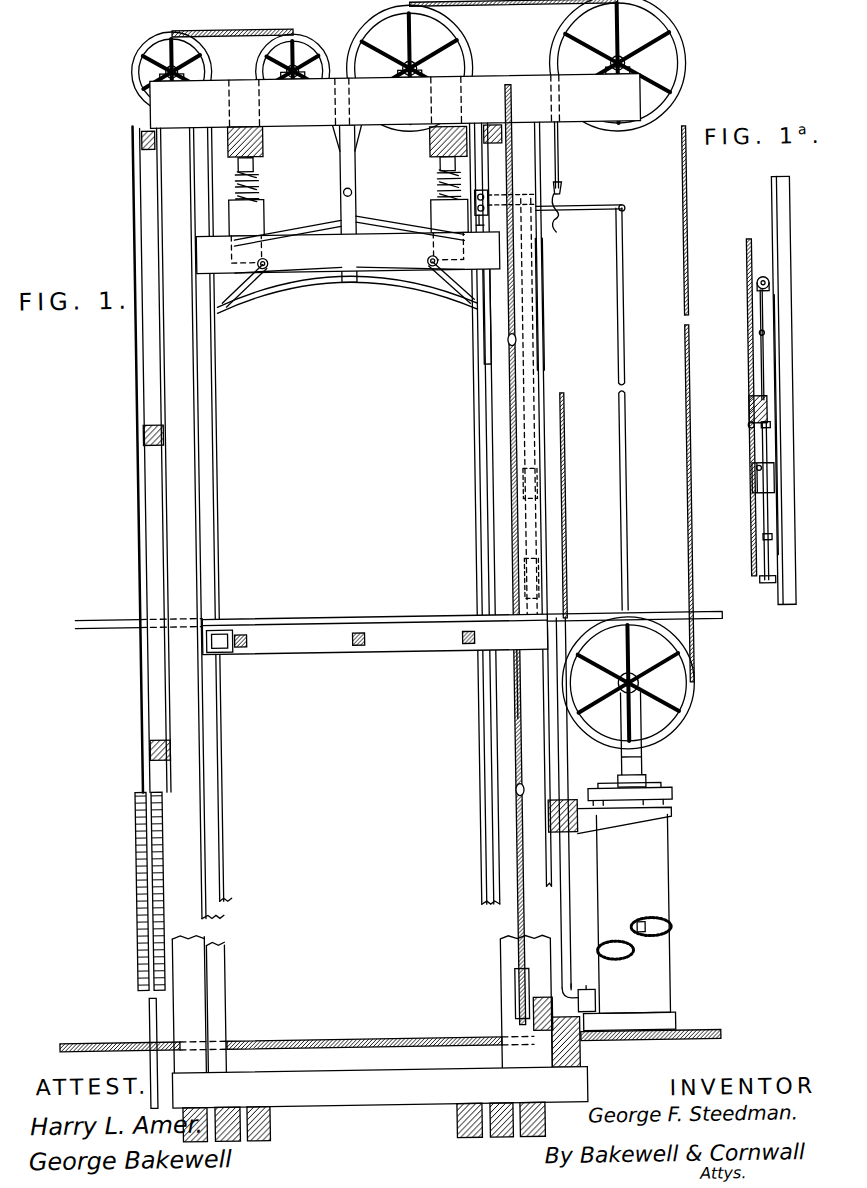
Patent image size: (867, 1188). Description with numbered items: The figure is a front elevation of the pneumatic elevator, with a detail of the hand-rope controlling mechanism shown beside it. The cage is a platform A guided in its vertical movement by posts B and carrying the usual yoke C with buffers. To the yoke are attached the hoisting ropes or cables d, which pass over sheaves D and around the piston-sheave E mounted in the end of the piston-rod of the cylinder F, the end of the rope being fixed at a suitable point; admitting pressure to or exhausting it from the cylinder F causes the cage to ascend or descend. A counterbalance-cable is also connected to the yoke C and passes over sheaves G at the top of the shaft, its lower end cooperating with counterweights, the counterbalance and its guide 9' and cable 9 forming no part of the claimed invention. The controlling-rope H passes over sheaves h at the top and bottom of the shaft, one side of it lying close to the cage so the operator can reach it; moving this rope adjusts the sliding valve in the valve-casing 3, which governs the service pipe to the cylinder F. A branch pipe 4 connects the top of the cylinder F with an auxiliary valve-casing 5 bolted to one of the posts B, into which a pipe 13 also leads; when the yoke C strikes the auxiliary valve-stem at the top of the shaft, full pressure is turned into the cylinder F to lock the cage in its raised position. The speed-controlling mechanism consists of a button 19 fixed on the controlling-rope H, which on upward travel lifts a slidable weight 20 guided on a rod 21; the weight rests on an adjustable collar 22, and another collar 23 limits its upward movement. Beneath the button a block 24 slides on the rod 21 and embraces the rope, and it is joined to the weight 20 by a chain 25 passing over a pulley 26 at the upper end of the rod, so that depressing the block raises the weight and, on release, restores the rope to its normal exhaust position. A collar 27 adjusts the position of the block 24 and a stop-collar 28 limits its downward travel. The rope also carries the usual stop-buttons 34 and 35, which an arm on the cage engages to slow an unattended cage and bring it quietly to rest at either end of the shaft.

In FIG. 1, the platform A is at (327, 616).
In FIG. 1, the posts B is at (220, 746).
In FIG. 1, the yoke C is at (348, 264).
In FIG. 1, the sheaves D is at (478, 64).
In FIG. 1, the hoisting ropes or cables d is at (688, 222).
In FIG. 1, the piston-sheave E is at (694, 714).
In FIG. 1, the cylinder F is at (660, 881).
In FIG. 1, the sheaves G is at (140, 46).
In FIG. 1, the controlling-rope H is at (512, 683).
In FIG. 1a, the controlling-rope H is at (750, 261).
In FIG. 1, the sheaves h is at (512, 100).
In FIG. 1, the valve-casing 3 is at (584, 990).
In FIG. 1, the branch pipe 4 is at (566, 210).
In FIG. 1, the valve-casing 5 is at (484, 192).
In FIG. 1, the belt 9 is at (268, 144).
In FIG. 1, the rack 9' is at (134, 950).
In FIG. 1, the pipe 13 is at (549, 276).
In FIG. 1a, the button 19 is at (752, 433).
In FIG. 1a, the slidable weight 20 is at (752, 406).
In FIG. 1a, the guiding-rod 21 is at (762, 314).
In FIG. 1a, the adjustable collar 22 is at (774, 430).
In FIG. 1a, the adjustable collar 23 is at (763, 340).
In FIG. 1a, the block 24 is at (777, 482).
In FIG. 1a, the chain 25 is at (780, 384).
In FIG. 1a, the pulley 26 is at (772, 284).
In FIG. 1a, the collar 27 is at (758, 475).
In FIG. 1a, the stop-collar 28 is at (763, 543).
In FIG. 1, the stop-button 34 is at (512, 795).
In FIG. 1, the stop-button 35 is at (511, 341).